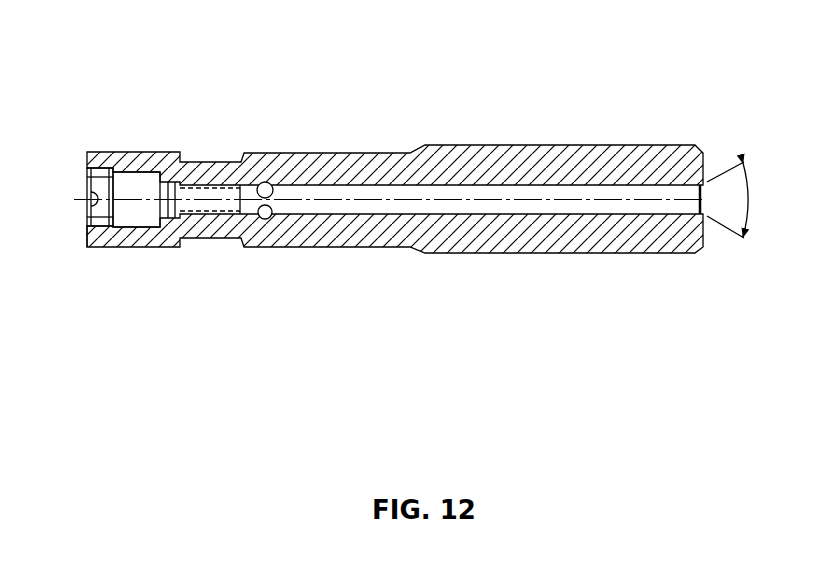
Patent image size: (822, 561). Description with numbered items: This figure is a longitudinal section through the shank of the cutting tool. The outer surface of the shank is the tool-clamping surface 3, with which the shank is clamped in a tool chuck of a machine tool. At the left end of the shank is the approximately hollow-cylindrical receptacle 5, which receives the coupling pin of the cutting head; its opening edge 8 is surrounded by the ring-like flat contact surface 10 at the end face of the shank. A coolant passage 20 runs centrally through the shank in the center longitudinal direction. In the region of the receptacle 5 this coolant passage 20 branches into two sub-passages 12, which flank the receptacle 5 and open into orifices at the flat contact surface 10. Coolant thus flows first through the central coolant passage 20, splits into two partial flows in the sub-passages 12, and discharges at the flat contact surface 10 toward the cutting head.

The tool-clamping surface 3 is at (571, 158).
The receptacle 5 is at (127, 192).
The opening edge 8 is at (88, 232).
The flat contact surface 10 is at (88, 240).
The sub-passages 12 is at (262, 182).
The coolant passage 20 is at (697, 201).